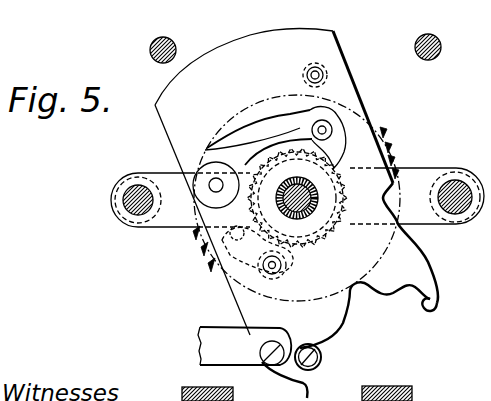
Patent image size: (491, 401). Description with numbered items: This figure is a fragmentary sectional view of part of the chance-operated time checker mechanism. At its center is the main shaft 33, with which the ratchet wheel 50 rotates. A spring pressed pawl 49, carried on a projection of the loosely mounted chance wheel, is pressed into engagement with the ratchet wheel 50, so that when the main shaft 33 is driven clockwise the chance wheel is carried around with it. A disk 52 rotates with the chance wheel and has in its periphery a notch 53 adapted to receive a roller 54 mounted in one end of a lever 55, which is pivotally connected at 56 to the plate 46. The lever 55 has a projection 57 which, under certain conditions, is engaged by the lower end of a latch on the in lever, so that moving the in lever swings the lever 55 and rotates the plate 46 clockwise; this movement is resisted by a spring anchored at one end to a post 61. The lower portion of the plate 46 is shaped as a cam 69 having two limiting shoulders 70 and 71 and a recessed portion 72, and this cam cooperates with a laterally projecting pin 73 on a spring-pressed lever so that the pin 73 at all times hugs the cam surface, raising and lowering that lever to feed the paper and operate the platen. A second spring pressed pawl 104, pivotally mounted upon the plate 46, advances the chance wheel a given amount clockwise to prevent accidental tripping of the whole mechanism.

The main shaft 33 is at (308, 178).
The plate 46 is at (333, 35).
The spring pressed pawl 49 is at (297, 268).
The ratchet wheel 50 is at (340, 240).
The disk 52 is at (290, 222).
The notch 53 is at (248, 215).
The roller 54 is at (335, 128).
The lever 55 is at (275, 126).
The pivotal connection 56 is at (216, 185).
The projection 57 is at (207, 149).
The post 61 is at (123, 200).
The cam 69 is at (343, 330).
The limiting shoulder 70 is at (265, 364).
The limiting shoulder 71 is at (434, 308).
The recessed portion 72 is at (363, 289).
The laterally projecting pin 73 is at (322, 358).
The spring pressed pawl 104 is at (327, 72).